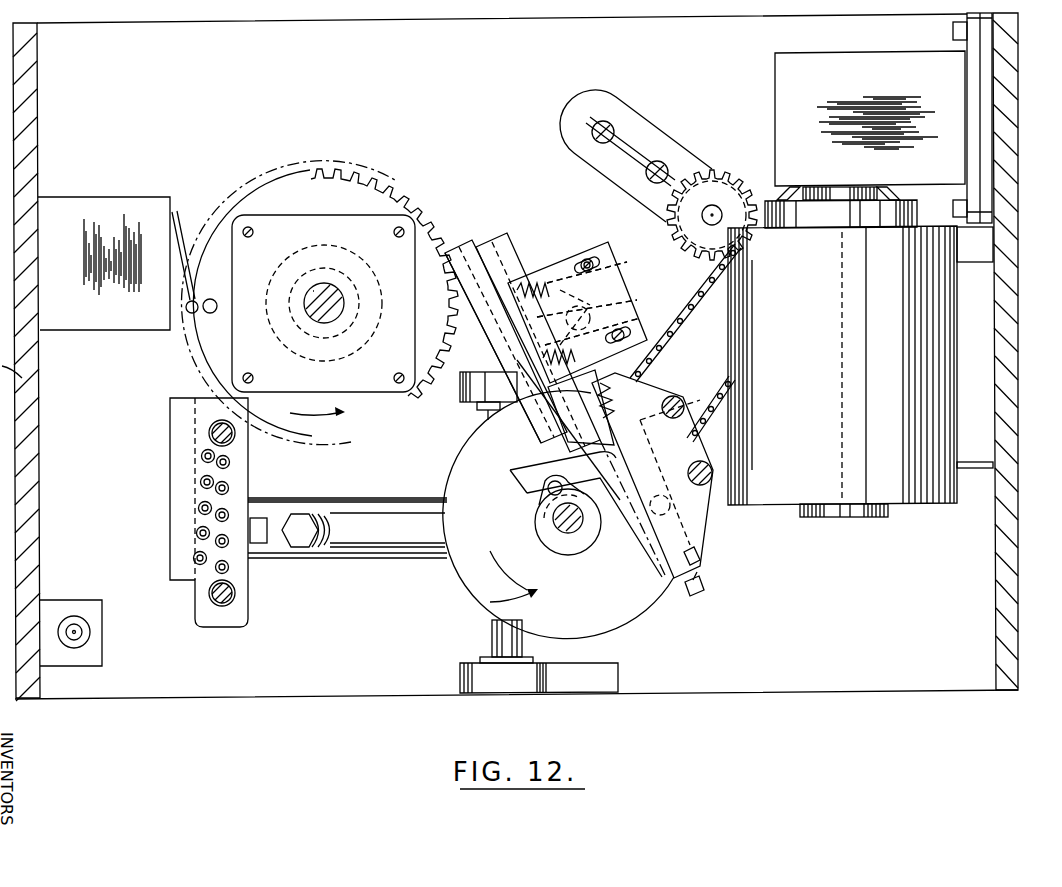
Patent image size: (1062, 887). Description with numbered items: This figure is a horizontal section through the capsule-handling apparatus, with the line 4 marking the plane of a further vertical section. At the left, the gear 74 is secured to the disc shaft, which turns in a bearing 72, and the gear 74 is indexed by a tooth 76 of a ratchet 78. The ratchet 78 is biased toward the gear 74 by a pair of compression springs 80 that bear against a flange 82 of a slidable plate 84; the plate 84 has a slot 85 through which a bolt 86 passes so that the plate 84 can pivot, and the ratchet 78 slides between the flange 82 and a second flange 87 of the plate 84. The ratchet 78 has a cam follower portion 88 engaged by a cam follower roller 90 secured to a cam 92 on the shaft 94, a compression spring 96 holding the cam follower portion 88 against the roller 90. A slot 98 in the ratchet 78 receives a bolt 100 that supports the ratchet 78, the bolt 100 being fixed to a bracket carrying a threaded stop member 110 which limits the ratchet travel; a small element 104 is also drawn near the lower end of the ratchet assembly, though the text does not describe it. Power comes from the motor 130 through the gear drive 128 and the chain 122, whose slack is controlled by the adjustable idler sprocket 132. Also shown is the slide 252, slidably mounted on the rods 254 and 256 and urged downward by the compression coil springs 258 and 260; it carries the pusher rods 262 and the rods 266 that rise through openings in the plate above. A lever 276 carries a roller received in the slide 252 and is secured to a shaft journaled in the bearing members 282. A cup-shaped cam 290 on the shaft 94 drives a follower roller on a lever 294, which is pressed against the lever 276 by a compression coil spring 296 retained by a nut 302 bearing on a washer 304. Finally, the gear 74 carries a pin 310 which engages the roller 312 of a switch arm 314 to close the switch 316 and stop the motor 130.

The section line 4— 4 is at (1010, 458).
The bearing 72 is at (293, 204).
The gear 74 is at (353, 187).
The tooth 76 is at (450, 245).
The ratchet 78 is at (490, 272).
The compression springs 80 is at (548, 363).
The flange 82 is at (615, 270).
The slidable plate 84 is at (632, 288).
The slot 85 is at (634, 304).
The bolt 86 is at (636, 320).
The flange 87 is at (477, 322).
The cam follower portion 88 is at (533, 487).
The cam follower roller 90 is at (562, 483).
The cam 92 is at (597, 533).
The shaft 94 is at (567, 532).
The compression spring 96 is at (637, 385).
The slot 98 is at (718, 534).
The bolt 100 is at (712, 510).
The stop 104 is at (712, 553).
The threaded stop member 110 is at (697, 572).
The chain 122 is at (705, 305).
The gear drive 128 is at (872, 57).
The motor 130 is at (852, 364).
The adjustable idler sprocket 132 is at (731, 180).
The slide 252 is at (180, 498).
The rod 254 is at (232, 435).
The rod 256 is at (232, 594).
The compression coil spring 258 is at (212, 438).
The compression coil spring 260 is at (222, 606).
The pusher rods 262 is at (229, 513).
The rods 266 is at (197, 533).
The lever 276 is at (318, 500).
The bearing member 282 is at (490, 683).
The cup-shaped cam 290 is at (467, 575).
The lever 294 is at (375, 545).
The compression coil spring 296 is at (340, 522).
The nut 302 is at (298, 540).
The washer 304 is at (312, 545).
The pin 310 is at (213, 303).
The roller 312 is at (190, 318).
The switch arm 314 is at (177, 260).
The switch 316 is at (112, 207).